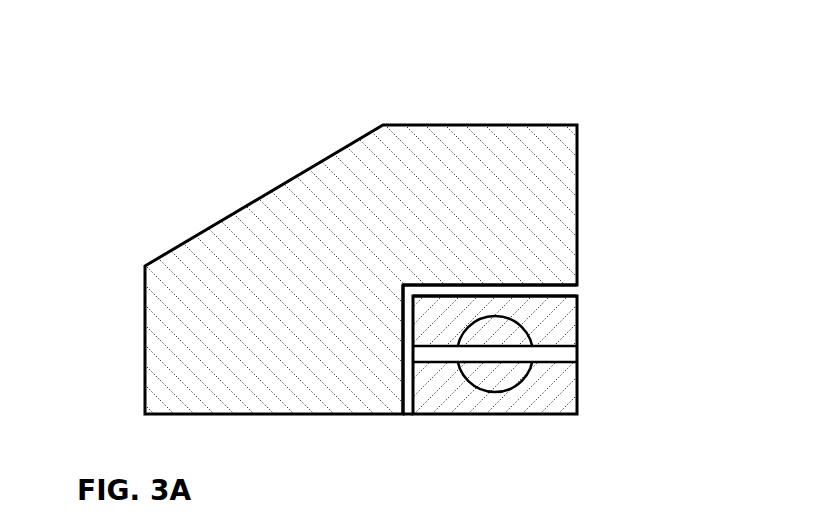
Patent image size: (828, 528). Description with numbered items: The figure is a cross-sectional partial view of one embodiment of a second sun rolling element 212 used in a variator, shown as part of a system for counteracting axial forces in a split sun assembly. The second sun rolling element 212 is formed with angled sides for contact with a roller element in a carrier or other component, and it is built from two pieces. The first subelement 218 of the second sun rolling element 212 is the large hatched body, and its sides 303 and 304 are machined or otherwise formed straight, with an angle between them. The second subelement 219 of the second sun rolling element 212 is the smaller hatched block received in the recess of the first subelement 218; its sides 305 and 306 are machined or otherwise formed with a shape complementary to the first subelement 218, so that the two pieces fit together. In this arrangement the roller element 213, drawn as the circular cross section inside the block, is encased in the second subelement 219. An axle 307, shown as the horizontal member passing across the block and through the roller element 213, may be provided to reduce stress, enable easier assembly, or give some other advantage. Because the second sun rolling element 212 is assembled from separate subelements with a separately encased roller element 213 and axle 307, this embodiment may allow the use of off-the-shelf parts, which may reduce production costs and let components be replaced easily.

The second sun rolling element 212 is at (175, 100).
The first subelement 218 is at (491, 125).
The second subelement 219 is at (590, 323).
The roller element 213 is at (495, 392).
The side 303 is at (555, 296).
The side 304 is at (404, 398).
The side 305 is at (532, 285).
The side 306 is at (411, 312).
The axle 307 is at (572, 355).